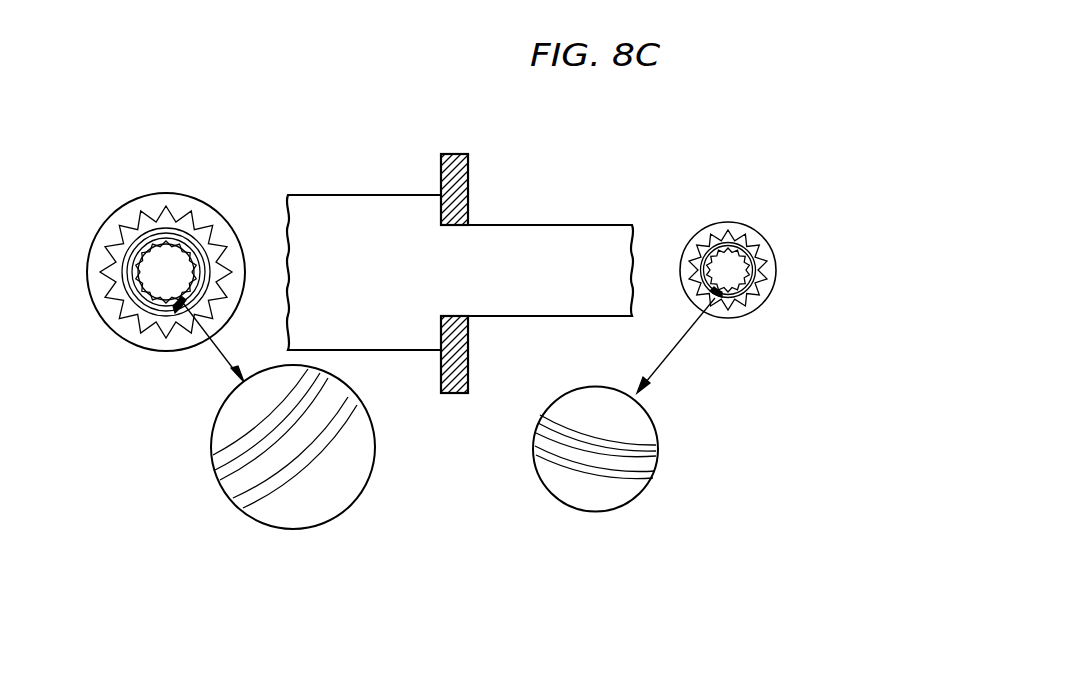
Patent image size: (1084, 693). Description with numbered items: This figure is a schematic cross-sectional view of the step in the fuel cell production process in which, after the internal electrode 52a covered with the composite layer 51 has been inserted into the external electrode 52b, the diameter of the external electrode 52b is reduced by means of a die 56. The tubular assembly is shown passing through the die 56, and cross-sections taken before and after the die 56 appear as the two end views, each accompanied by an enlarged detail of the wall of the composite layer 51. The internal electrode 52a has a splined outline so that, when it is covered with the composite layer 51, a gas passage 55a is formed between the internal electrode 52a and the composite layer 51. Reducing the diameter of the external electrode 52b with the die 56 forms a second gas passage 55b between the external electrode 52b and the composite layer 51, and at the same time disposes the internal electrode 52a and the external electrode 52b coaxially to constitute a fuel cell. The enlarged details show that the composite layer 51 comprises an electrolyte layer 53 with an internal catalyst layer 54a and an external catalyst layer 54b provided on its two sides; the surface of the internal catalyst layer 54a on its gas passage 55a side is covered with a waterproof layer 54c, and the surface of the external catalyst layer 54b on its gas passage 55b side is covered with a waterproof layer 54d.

The composite layer 51 is at (118, 410).
The internal electrode 52a is at (135, 233).
The external electrode 52b is at (105, 233).
The electrolyte layer 53 is at (230, 485).
The internal catalyst layer 54a is at (223, 477).
The external catalyst layer 54b is at (243, 505).
The waterproof layer 54c is at (220, 458).
The waterproof layer 54d is at (247, 500).
The gas passage 55a is at (773, 208).
The gas passage 55b is at (738, 233).
The die 56 is at (500, 362).